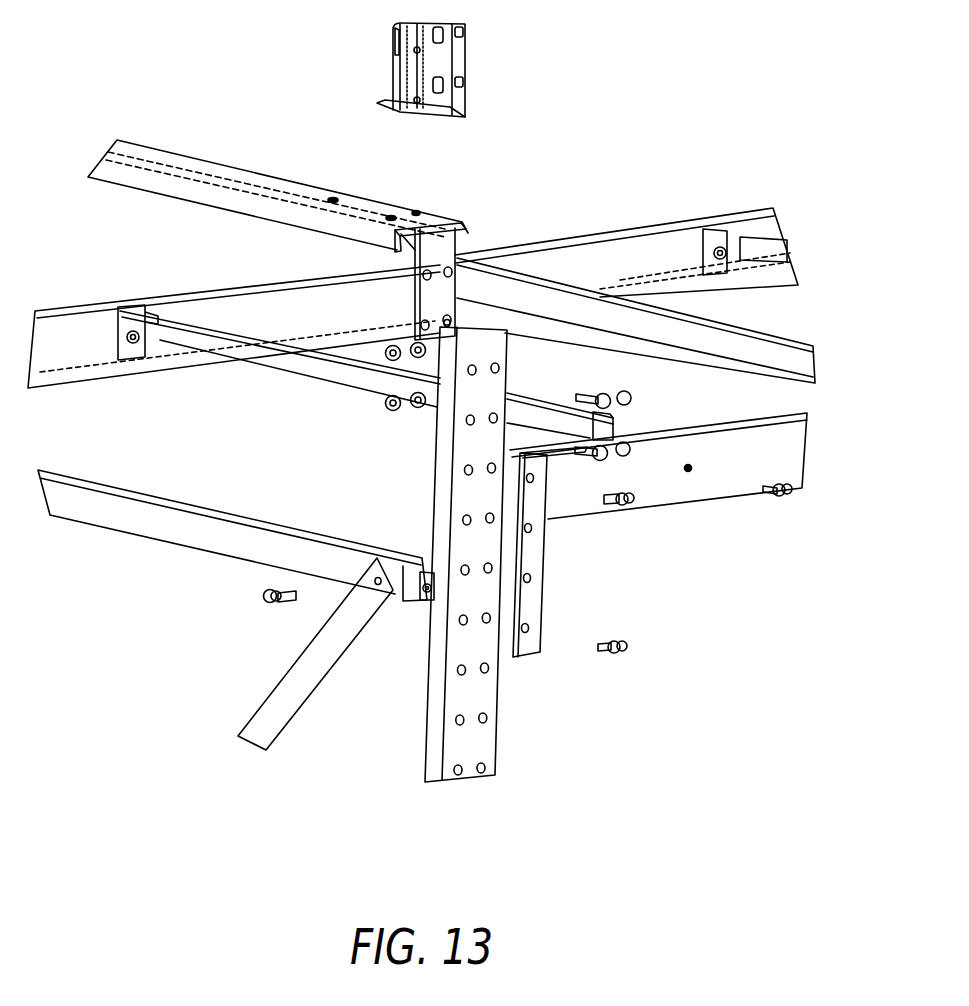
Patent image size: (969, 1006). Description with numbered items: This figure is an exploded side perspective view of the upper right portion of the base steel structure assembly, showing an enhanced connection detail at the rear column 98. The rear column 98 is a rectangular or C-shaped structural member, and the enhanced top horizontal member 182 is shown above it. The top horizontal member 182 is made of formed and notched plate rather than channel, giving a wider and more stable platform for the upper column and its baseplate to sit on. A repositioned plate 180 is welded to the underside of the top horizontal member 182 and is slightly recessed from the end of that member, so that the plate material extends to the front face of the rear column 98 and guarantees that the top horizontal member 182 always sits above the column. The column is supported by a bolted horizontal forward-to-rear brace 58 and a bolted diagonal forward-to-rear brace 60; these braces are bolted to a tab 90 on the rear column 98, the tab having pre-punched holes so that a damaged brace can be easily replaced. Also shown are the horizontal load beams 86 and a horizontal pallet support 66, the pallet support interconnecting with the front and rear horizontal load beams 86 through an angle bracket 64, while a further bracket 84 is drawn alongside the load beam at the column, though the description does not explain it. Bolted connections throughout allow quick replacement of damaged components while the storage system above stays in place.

The horizontal forward-to-rear brace 58 is at (194, 551).
The diagonal forward-to-rear brace 60 is at (289, 728).
The angle bracket 64 is at (130, 357).
The horizontal pallet support 66 is at (341, 387).
The angle bracket 84 is at (548, 568).
The horizontal load beam 86 is at (652, 509).
The tab 90 is at (423, 611).
The rear column 98 is at (499, 758).
The plate 180 is at (463, 230).
The top horizontal member 182 is at (204, 157).